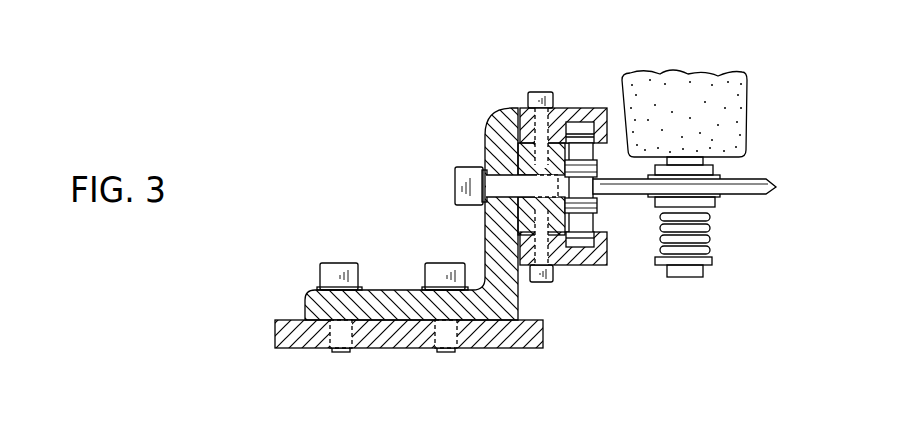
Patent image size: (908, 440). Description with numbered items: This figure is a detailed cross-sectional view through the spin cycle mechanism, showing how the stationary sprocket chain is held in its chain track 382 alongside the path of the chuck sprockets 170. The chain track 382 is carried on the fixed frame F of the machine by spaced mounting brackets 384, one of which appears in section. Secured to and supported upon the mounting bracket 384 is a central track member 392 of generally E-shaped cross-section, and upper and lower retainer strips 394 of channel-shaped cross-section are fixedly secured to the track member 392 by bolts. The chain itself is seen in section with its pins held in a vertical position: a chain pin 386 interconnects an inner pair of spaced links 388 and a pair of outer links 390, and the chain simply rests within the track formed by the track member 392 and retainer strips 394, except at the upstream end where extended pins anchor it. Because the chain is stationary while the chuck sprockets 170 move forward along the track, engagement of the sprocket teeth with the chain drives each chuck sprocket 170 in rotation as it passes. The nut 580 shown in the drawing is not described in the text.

The chuck sprocket 170 is at (776, 186).
The nut 580 is at (593, 160).
The chain track 382 is at (572, 97).
The mounting bracket 384 is at (485, 243).
The chain pin 386 is at (588, 268).
The inner links 388 is at (598, 176).
The outer links 390 is at (590, 118).
The central track member 392 is at (485, 145).
The retainer strip 394 is at (523, 107).
The frame F is at (314, 347).